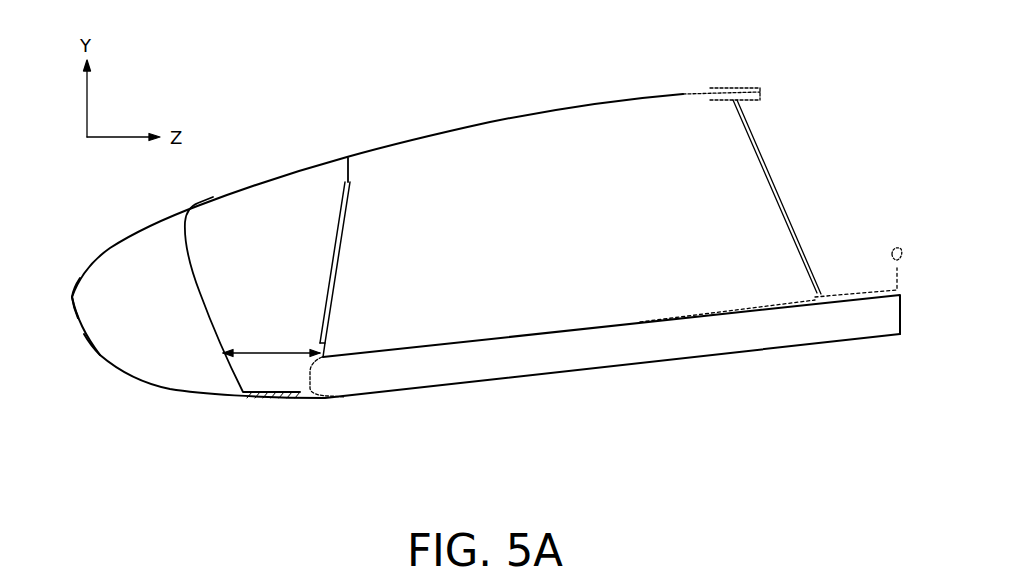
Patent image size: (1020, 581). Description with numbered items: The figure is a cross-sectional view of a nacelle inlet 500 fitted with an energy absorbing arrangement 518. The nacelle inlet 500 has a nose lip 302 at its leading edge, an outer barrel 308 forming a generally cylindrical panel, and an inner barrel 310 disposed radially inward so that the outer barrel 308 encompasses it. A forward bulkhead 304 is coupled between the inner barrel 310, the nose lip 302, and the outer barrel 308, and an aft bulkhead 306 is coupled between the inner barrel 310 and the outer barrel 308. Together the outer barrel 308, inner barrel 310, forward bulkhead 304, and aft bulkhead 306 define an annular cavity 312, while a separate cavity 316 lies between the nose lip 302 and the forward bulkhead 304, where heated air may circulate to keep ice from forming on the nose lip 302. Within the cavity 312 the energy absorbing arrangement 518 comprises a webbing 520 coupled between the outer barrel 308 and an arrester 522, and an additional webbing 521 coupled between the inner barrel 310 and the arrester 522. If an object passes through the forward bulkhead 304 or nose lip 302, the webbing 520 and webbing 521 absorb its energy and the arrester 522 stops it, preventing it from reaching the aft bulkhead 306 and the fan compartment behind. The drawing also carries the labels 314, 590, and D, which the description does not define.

The nacelle inlet 500 is at (512, 77).
The nose lip 302 is at (93, 348).
The forward bulkhead 304 is at (200, 293).
The aft bulkhead 306 is at (780, 195).
The outer barrel 308 is at (440, 133).
The inner barrel 310 is at (397, 378).
The cavity 312 is at (520, 277).
The leading edge 314 is at (66, 292).
The cavity 316 is at (145, 313).
The energy absorbing arrangement 518 is at (497, 186).
The webbing 520 is at (352, 170).
The webbing 521 is at (327, 343).
The arrester 522 is at (338, 260).
The direction of view 590 is at (396, 273).
The distance D is at (270, 353).